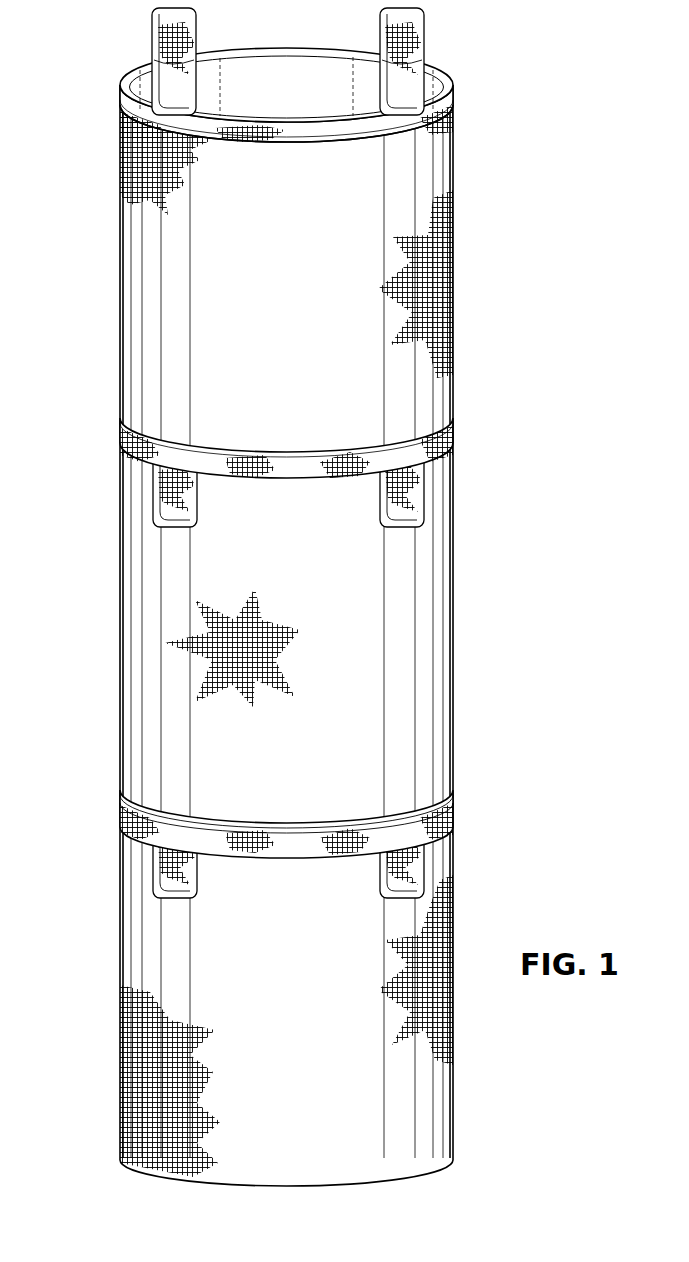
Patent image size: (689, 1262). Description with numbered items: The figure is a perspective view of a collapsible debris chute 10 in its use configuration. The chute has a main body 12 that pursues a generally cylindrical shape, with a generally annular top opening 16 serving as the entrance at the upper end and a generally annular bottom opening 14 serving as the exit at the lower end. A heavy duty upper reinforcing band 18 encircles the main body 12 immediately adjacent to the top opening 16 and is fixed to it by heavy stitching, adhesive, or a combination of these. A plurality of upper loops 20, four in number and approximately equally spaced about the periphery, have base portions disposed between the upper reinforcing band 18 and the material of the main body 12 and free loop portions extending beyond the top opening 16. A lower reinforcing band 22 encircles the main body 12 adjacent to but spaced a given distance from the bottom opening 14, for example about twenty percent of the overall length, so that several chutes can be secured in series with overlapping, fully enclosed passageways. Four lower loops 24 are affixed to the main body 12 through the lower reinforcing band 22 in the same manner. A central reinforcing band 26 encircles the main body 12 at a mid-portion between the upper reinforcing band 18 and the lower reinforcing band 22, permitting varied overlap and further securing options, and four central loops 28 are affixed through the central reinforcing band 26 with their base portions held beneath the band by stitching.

The collapsible debris chute 10 is at (350, 597).
The main body 12 is at (142, 273).
The bottom opening 14 is at (455, 1152).
The top opening 16 is at (122, 80).
The upper reinforcing band 18 is at (460, 125).
The upper loops 20 is at (445, 70).
The lower reinforcing band 22 is at (455, 812).
The lower loops 24 is at (425, 872).
The central reinforcing band 26 is at (125, 450).
The central loops 28 is at (152, 512).